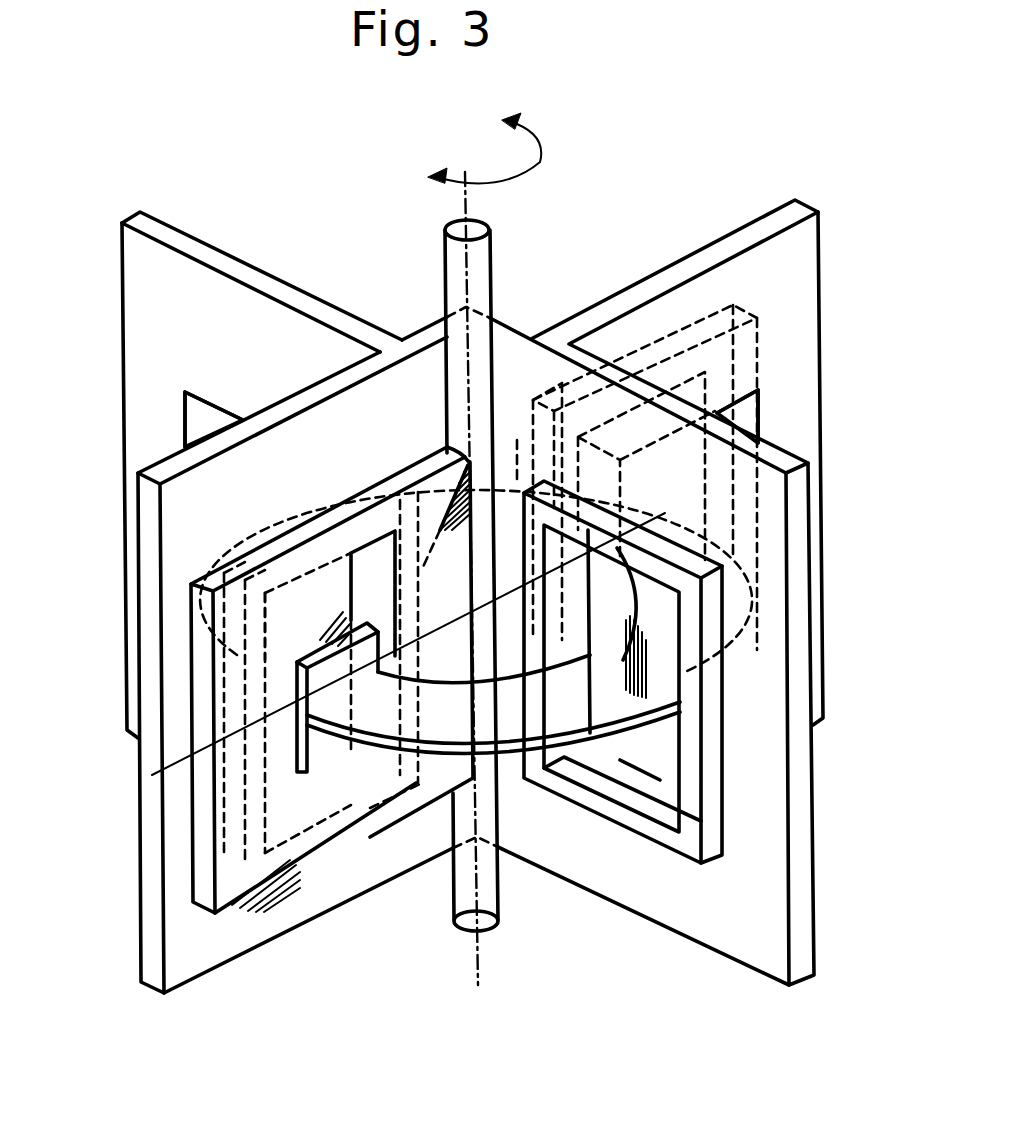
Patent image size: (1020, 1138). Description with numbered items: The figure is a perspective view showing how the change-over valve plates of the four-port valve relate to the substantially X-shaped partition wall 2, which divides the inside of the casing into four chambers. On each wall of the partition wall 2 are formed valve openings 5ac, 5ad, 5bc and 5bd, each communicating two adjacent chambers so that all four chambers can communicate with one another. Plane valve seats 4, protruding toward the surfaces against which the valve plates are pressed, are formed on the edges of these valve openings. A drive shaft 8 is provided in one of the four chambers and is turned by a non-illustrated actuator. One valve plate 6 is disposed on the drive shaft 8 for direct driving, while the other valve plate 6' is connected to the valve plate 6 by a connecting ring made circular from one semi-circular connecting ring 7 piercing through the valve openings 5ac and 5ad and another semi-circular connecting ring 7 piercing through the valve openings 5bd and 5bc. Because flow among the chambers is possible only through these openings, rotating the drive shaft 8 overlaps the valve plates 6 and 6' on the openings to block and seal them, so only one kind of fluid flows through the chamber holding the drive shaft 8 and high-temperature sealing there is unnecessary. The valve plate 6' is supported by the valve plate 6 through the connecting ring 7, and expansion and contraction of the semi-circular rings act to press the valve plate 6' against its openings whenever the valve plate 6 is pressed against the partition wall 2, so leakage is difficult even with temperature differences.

The partition wall 2 is at (431, 346).
The plane valve seat 4 is at (681, 844).
The valve opening 5ac is at (206, 420).
The valve opening 5bc is at (736, 418).
The valve opening 5ad is at (284, 653).
The valve opening 5bd is at (644, 753).
The valve plate 6 is at (306, 739).
The valve plate 6' is at (637, 419).
The semi-circular connecting ring 7 is at (512, 468).
The drive shaft 8 is at (478, 281).